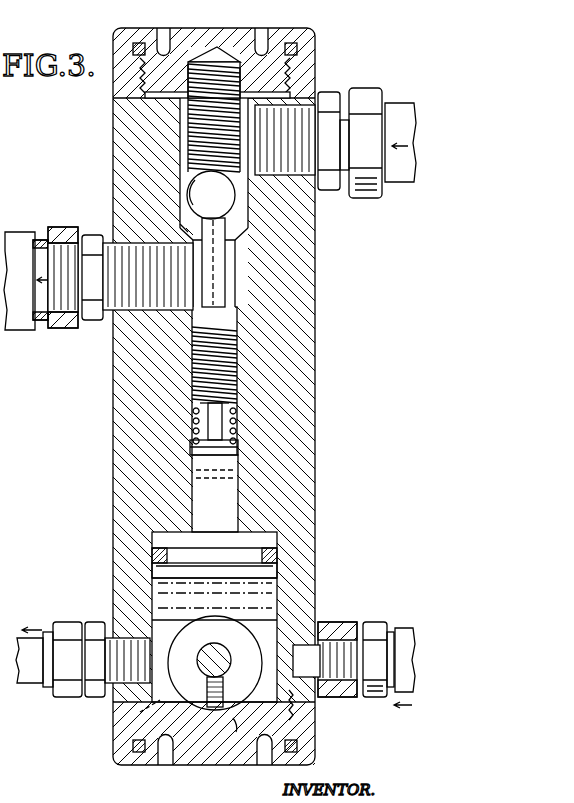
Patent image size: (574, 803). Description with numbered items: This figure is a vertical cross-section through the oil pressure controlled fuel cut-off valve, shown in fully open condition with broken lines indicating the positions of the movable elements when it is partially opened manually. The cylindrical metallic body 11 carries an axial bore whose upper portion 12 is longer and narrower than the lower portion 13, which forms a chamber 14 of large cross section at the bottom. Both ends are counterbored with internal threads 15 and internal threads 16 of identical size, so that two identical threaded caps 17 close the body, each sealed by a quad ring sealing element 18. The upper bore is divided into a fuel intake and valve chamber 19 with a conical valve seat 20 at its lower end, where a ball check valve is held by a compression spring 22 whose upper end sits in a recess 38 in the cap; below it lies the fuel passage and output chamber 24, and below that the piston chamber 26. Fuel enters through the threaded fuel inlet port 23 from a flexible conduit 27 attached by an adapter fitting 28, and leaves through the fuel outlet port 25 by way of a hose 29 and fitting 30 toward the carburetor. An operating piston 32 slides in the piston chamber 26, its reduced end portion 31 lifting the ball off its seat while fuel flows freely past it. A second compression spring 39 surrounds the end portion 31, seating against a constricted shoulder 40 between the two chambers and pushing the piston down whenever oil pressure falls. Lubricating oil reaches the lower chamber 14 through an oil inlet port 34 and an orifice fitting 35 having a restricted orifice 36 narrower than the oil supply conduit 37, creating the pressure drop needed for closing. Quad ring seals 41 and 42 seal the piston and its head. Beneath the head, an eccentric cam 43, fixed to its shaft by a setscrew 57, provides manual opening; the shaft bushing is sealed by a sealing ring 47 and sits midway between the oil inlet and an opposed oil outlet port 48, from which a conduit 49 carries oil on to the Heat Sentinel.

The cylindrical metallic body 11 is at (104, 181).
The upper portion of the bore 12 is at (247, 186).
The lower portion of the bore 13 is at (280, 586).
The chamber 14 is at (265, 560).
The internal threads 15 is at (140, 78).
The internal threads 16 is at (293, 712).
The threaded cap 17 is at (229, 40).
The sealing element 18 is at (132, 49).
The fuel intake and fuel valve chamber 19 is at (245, 190).
The valve seat 20 is at (236, 240).
The compression spring 22 is at (190, 118).
The fuel inlet port 23 is at (292, 100).
The fuel passage and fuel output chamber 24 is at (240, 265).
The fuel outlet port 25 is at (195, 232).
The piston chamber 26 is at (240, 374).
The hose or flexible pipe conduit 27 is at (399, 105).
The adapter fitting 28 is at (352, 100).
The conduit or hose 29 is at (20, 235).
The fitting 30 is at (78, 230).
The end portion of operating piston 31 is at (212, 285).
The operating piston 32 is at (240, 482).
The oil inlet port 34 is at (300, 640).
The orifice fitting 35 is at (370, 632).
The restricted orifice 36 is at (306, 661).
The oil supply conduit 37 is at (405, 628).
The recess 38 is at (186, 64).
The second compression spring 39 is at (240, 345).
The constricted shoulder 40 is at (237, 318).
The quad ring seal 41 is at (190, 450).
The quad ring seal 42 is at (152, 553).
The eccentric cam 43 is at (150, 693).
The sealing ring 47 is at (32, 616).
The oil outlet port 48 is at (135, 628).
The conduit 49 is at (32, 684).
The setscrew 57 is at (140, 712).